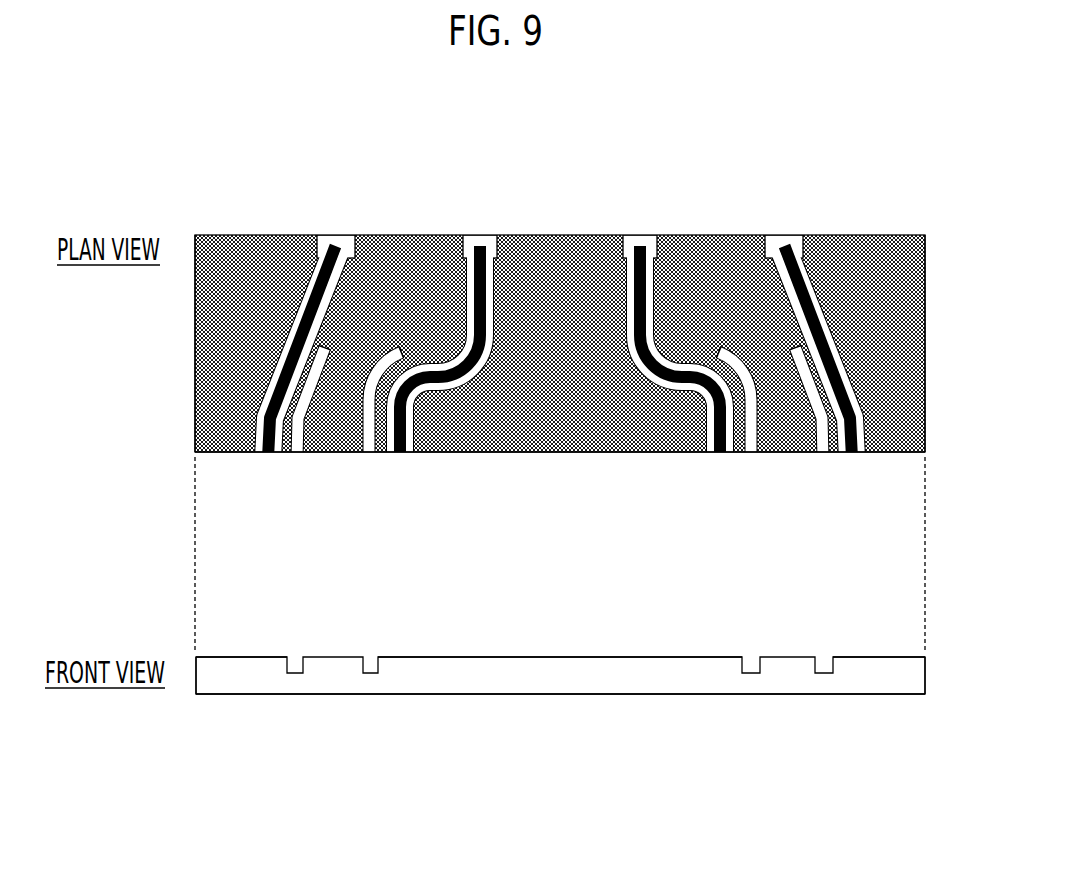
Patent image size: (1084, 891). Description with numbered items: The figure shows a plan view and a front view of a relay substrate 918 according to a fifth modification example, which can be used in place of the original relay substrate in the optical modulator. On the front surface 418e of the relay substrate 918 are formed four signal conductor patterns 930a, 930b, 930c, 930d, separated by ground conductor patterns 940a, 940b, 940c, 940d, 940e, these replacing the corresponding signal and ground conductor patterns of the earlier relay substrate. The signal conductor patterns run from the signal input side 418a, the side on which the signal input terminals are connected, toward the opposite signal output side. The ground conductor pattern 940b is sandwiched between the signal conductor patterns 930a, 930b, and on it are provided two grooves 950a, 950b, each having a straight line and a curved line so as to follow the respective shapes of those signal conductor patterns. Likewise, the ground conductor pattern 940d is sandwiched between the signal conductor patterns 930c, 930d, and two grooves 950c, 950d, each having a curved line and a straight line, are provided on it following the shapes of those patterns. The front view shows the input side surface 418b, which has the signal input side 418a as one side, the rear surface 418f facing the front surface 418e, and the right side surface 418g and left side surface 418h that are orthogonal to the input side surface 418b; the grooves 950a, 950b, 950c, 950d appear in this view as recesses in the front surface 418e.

The relay substrate 918 is at (200, 126).
The signal conductor pattern 930a is at (784, 235).
The signal conductor pattern 930b is at (639, 235).
The signal conductor pattern 930c is at (480, 235).
The signal conductor pattern 930d is at (340, 235).
The ground conductor pattern 940a is at (835, 235).
The ground conductor pattern 940b is at (707, 235).
The ground conductor pattern 940c is at (550, 235).
The ground conductor pattern 940d is at (410, 235).
The wall portion 940e is at (282, 235).
The groove 950a is at (826, 442).
The groove 950b is at (751, 442).
The groove 950c is at (368, 442).
The groove 950d is at (296, 442).
The signal input side 418a is at (206, 454).
The input side surface 418b is at (553, 452).
The front surface 418e is at (625, 435).
The rear surface 418f is at (497, 694).
The right side surface 418g is at (927, 237).
The left side surface 418h is at (195, 332).